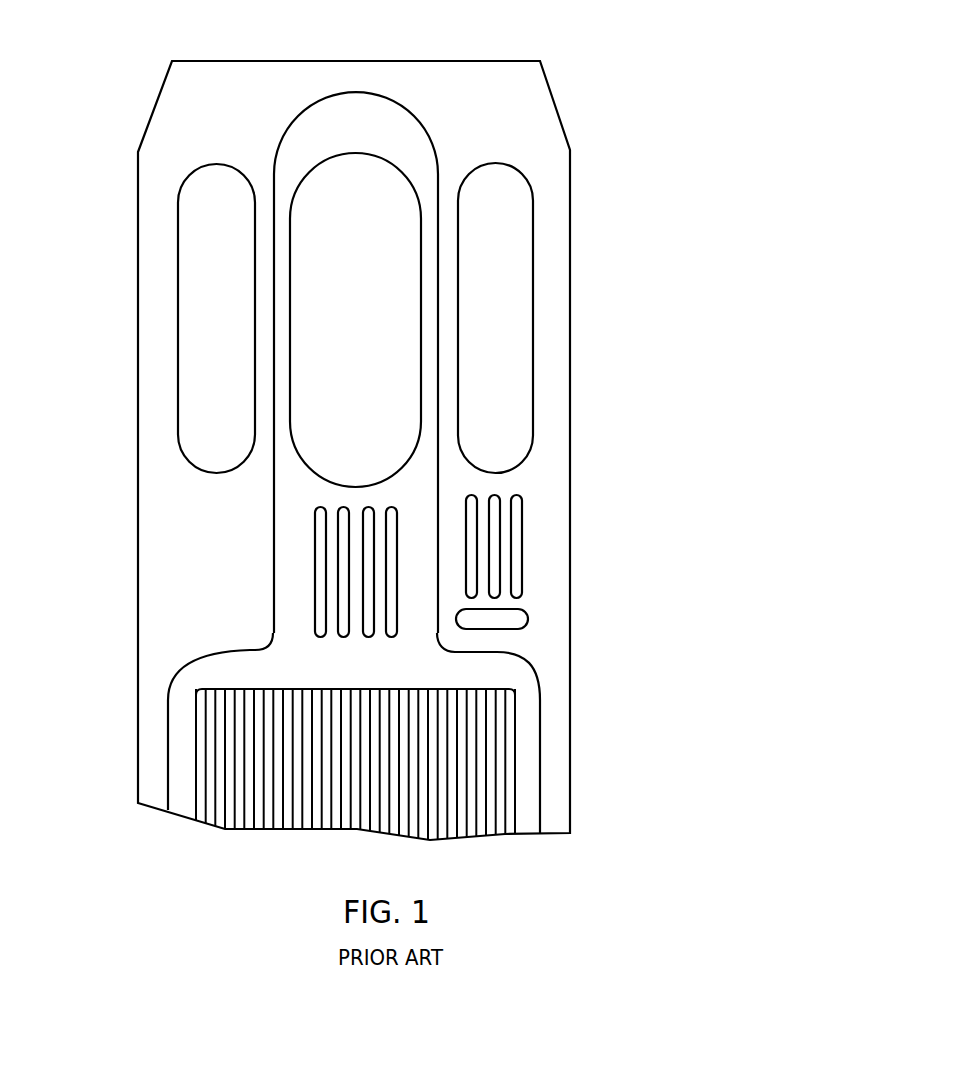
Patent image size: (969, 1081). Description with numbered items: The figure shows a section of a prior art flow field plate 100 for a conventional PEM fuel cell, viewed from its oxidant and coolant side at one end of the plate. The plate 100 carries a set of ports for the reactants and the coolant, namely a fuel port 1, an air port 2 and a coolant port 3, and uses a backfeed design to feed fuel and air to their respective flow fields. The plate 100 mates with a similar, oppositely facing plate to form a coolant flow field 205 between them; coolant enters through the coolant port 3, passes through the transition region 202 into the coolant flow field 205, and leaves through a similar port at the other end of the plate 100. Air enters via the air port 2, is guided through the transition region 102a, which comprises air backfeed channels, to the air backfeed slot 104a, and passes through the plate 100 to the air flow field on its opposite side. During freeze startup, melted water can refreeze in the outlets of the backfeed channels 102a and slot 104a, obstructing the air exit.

The flow field plate 100 is at (613, 77).
The fuel port 1 is at (192, 270).
The air port 2 is at (512, 303).
The coolant port 3 is at (387, 233).
The transition region 202 is at (390, 615).
The transition region 102a is at (505, 543).
The air backfeed slot 104a is at (512, 620).
The coolant flow field 205 is at (472, 822).